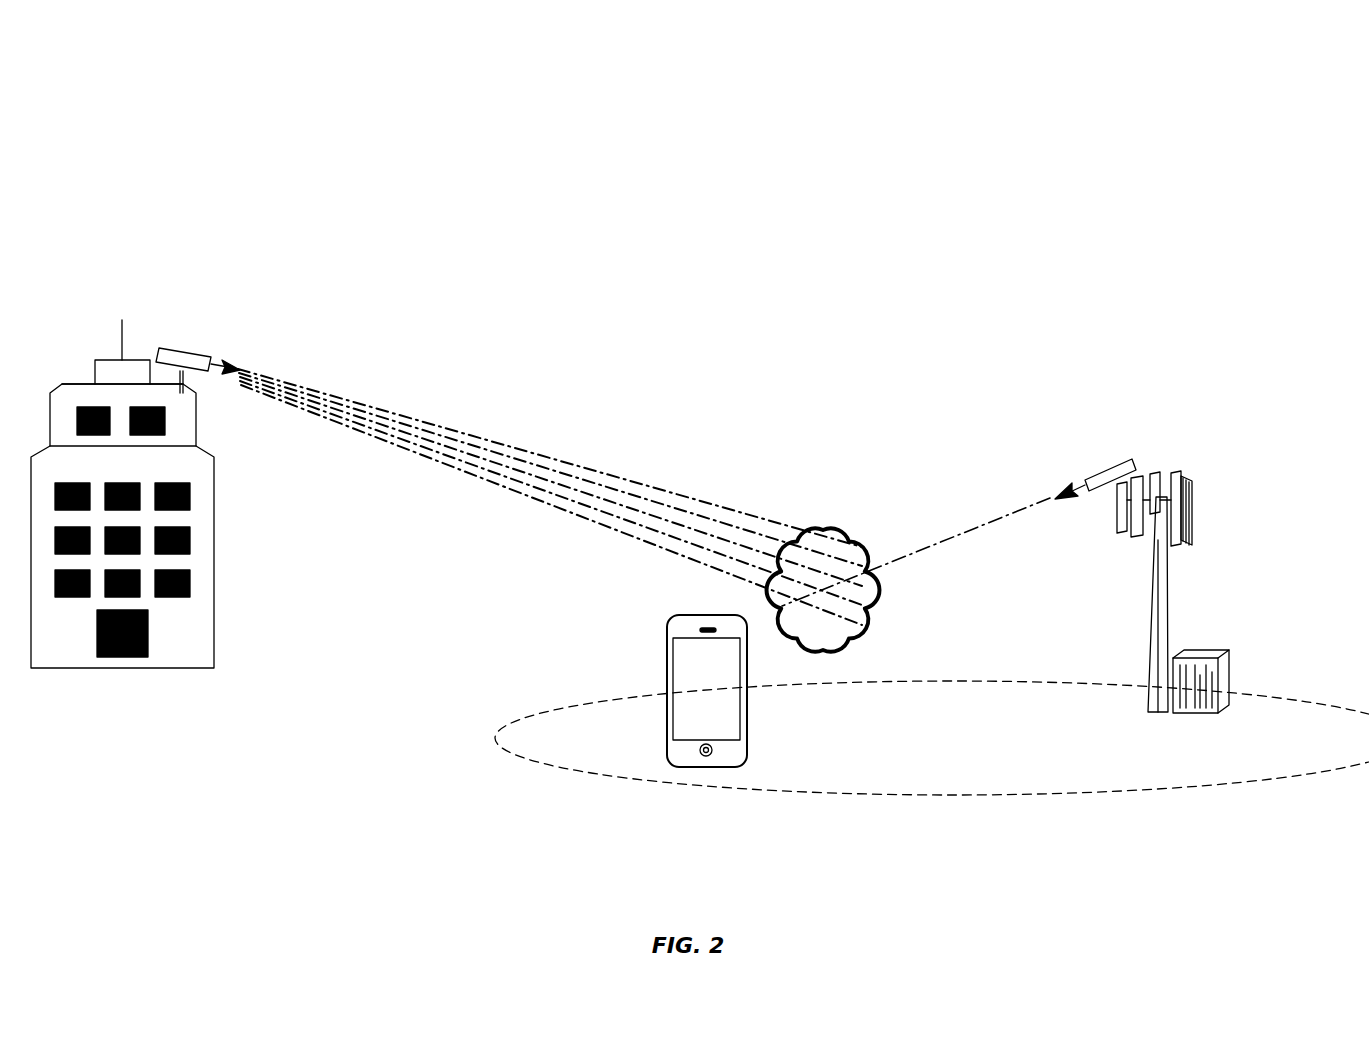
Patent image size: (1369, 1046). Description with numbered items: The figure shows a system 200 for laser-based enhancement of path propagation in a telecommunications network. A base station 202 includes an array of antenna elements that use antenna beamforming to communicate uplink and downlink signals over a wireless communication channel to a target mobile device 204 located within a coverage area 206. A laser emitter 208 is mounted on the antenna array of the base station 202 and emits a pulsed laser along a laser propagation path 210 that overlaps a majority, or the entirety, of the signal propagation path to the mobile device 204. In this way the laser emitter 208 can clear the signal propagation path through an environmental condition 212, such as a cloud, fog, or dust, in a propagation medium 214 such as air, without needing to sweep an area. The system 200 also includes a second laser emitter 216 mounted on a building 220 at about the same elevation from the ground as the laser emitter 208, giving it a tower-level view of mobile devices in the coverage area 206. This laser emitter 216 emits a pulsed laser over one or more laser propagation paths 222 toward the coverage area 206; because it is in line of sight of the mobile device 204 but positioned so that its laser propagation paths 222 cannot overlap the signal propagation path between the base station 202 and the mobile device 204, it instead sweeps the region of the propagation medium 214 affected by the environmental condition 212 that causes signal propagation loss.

The system 200 is at (1270, 114).
The base station 202 is at (1190, 480).
The mobile device 204 is at (666, 618).
The coverage area 206 is at (550, 706).
The laser emitter 208 is at (1110, 462).
The laser propagation path 210 is at (987, 505).
The environmental condition 212 is at (826, 530).
The propagation medium 214 is at (735, 442).
The laser emitter 216 is at (190, 347).
The building 220 is at (72, 382).
The laser propagation paths 222 is at (557, 453).